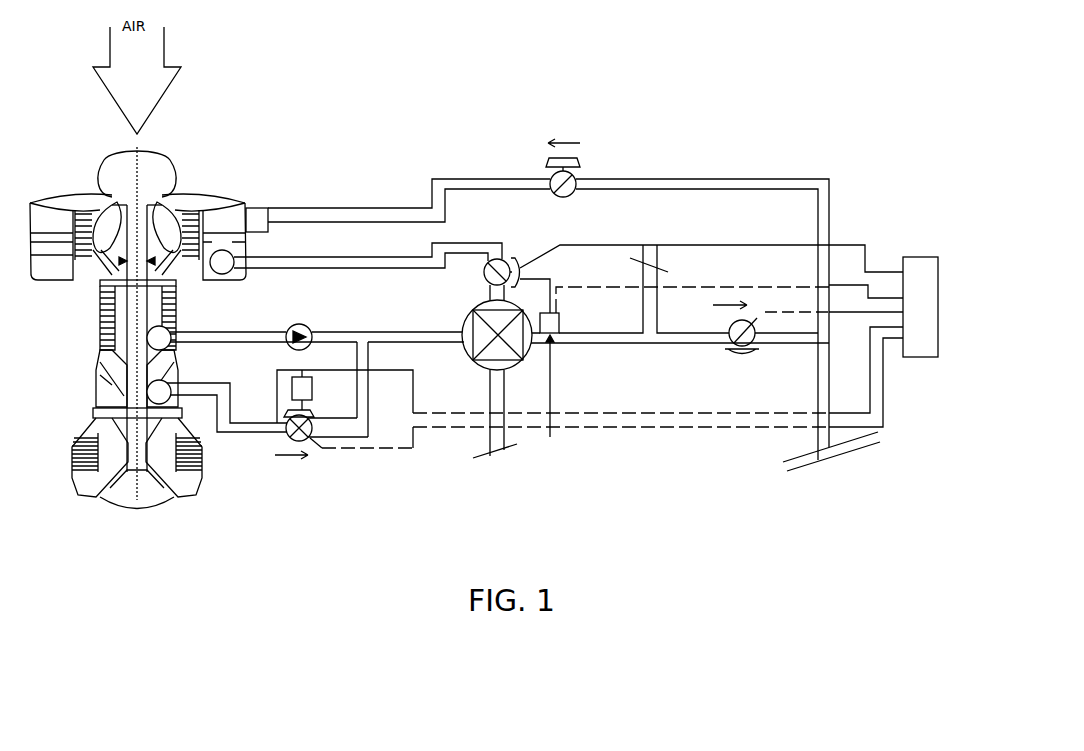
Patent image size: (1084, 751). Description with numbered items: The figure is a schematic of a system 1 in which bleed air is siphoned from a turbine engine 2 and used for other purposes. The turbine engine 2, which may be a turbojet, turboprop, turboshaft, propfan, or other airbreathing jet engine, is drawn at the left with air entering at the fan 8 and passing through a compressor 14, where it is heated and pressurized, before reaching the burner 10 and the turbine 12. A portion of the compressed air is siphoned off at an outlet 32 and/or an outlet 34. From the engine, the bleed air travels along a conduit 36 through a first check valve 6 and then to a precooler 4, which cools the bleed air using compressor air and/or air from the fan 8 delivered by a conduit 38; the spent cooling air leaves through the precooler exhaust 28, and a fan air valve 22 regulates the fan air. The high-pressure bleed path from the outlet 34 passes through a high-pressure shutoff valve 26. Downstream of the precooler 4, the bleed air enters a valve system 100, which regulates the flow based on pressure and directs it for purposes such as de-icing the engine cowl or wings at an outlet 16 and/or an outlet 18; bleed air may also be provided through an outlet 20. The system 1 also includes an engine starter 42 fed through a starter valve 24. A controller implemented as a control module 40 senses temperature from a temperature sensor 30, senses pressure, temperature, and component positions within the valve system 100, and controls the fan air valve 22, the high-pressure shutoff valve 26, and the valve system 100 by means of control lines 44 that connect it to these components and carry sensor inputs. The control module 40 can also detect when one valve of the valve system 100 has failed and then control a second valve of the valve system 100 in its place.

The system 1 is at (629, 85).
The turbine engine 2 is at (61, 152).
The precooler 4 is at (483, 328).
The first check valve 6 is at (287, 331).
The fan 8 is at (186, 193).
The burner 10 is at (100, 392).
The turbine 12 is at (75, 447).
The compressor 14 is at (95, 262).
The outlet 16 is at (882, 439).
The outlet 18 is at (780, 468).
The outlet 20 is at (650, 270).
The fan air valve 22 is at (507, 258).
The starter valve 24 is at (553, 170).
The high-pressure shutoff valve 26 is at (287, 431).
The precooler exhaust 28 is at (497, 444).
The temperature sensor 30 is at (550, 437).
The outlet 32 is at (205, 325).
The outlet 34 is at (188, 396).
The conduit 36 is at (333, 333).
The conduit 38 is at (322, 258).
The control module 40 is at (923, 257).
The engine starter 42 is at (268, 210).
The control lines 44 is at (856, 227).
The valve system 100 is at (729, 338).